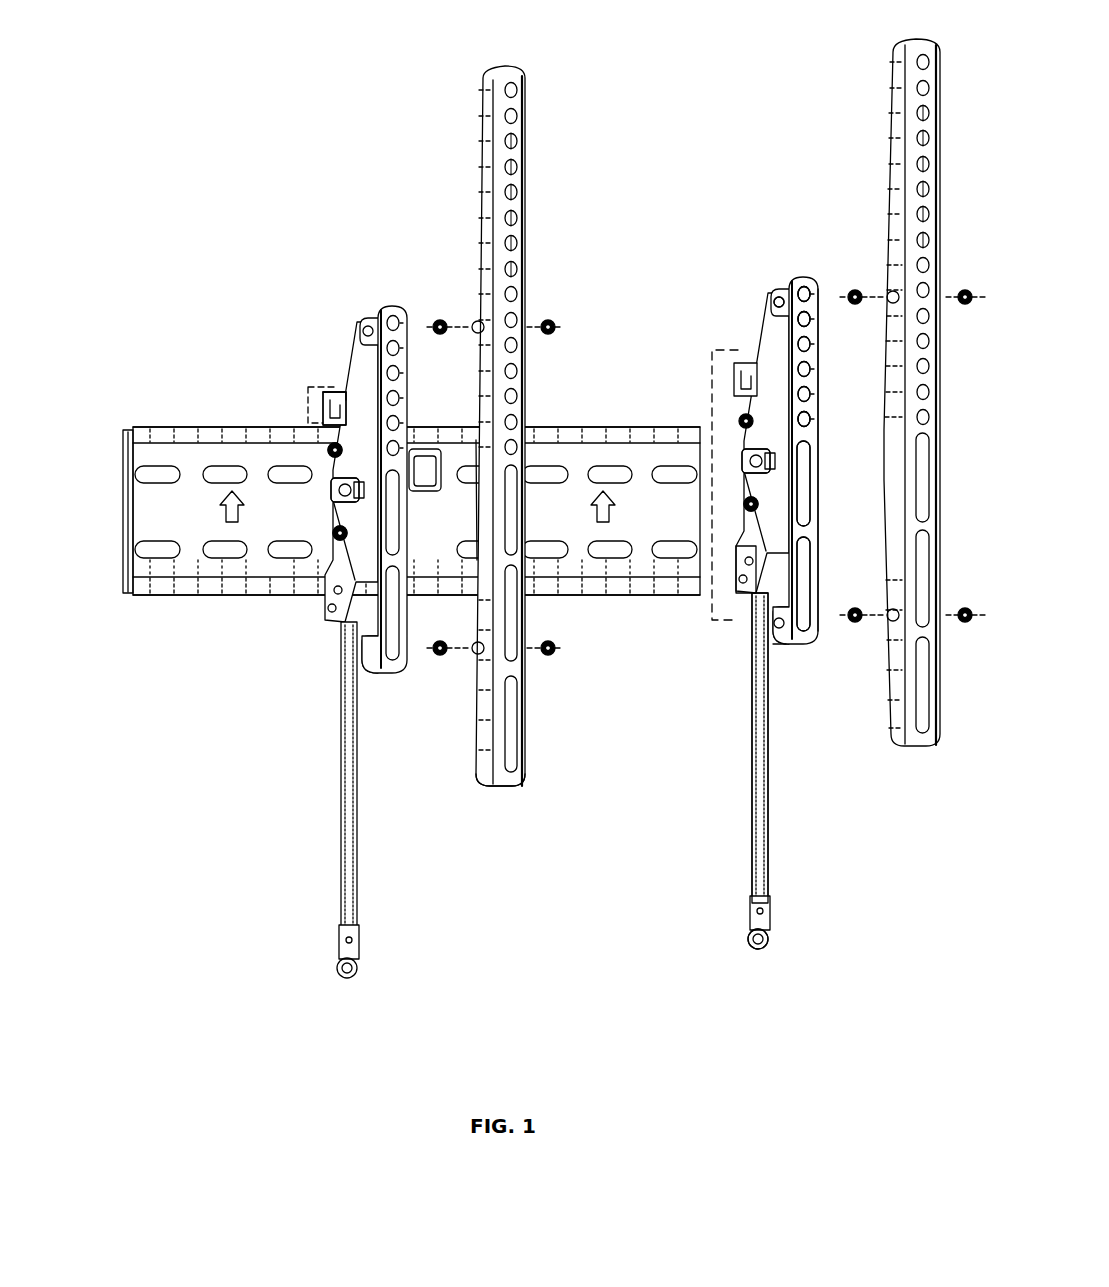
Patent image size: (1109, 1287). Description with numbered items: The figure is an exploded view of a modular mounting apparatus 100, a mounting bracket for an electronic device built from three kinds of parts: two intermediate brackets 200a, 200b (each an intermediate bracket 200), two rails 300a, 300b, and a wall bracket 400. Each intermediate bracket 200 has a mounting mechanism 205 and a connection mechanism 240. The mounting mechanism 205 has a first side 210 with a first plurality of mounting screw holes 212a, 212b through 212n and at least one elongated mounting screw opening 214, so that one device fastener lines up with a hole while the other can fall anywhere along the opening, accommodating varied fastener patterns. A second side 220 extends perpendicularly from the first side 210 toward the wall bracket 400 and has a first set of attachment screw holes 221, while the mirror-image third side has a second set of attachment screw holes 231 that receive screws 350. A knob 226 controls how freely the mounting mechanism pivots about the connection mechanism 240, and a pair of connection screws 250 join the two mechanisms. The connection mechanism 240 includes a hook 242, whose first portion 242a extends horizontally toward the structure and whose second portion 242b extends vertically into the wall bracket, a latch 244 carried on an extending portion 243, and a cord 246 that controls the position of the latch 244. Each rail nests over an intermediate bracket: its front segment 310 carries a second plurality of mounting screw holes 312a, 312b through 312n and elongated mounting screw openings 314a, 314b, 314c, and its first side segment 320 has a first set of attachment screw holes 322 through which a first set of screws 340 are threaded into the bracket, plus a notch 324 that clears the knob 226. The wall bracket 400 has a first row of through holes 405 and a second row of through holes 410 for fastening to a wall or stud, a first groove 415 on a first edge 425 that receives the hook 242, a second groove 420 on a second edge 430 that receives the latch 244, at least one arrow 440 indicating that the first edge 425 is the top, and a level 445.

The modular mounting apparatus 100 is at (238, 133).
The intermediate bracket 200 is at (820, 445).
The intermediate bracket 200a is at (318, 642).
The intermediate bracket 200b is at (768, 600).
The mounting mechanism 205 is at (747, 502).
The first side 210 is at (841, 340).
The mounting screw hole 212a is at (810, 292).
The mounting screw hole 212b is at (810, 319).
The mounting screw hole 212n is at (810, 418).
The elongated mounting screw opening 214 is at (815, 485).
The second side 220 is at (770, 526).
The first set of attachment screw holes 221 is at (775, 298).
The knob 226 is at (332, 490).
The second set of attachment screw holes 231 is at (788, 645).
The connection mechanism 240 is at (710, 378).
The hook 242 is at (307, 414).
The first portion of the hook 242a is at (344, 394).
The second portion of the hook 242b is at (322, 400).
The extending portion 243 is at (736, 588).
The latch 244 is at (740, 500).
The cord 246 is at (752, 832).
The connection screws 250 is at (330, 452).
The rail 300a is at (498, 426).
The rail 300b is at (892, 92).
The front segment 310 is at (549, 266).
The mounting screw hole 312a is at (518, 90).
The mounting screw hole 312b is at (518, 118).
The mounting screw hole 312n is at (515, 444).
The elongated mounting screw opening 314a is at (515, 528).
The elongated mounting screw opening 314b is at (515, 612).
The elongated mounting screw opening 314c is at (515, 745).
The first side segment 320 is at (490, 708).
The first set of attachment screw holes 322 is at (470, 320).
The notch 324 is at (476, 495).
The first set of screws 340 is at (435, 322).
The screws 350 is at (555, 333).
The wall bracket 400 is at (384, 510).
The first row of through holes 405 is at (135, 478).
The second row of through holes 410 is at (135, 552).
The first groove 415 is at (124, 447).
The second groove 420 is at (124, 590).
The first edge 425 is at (153, 427).
The second edge 430 is at (160, 600).
The arrow 440 is at (226, 512).
The level 445 is at (425, 448).